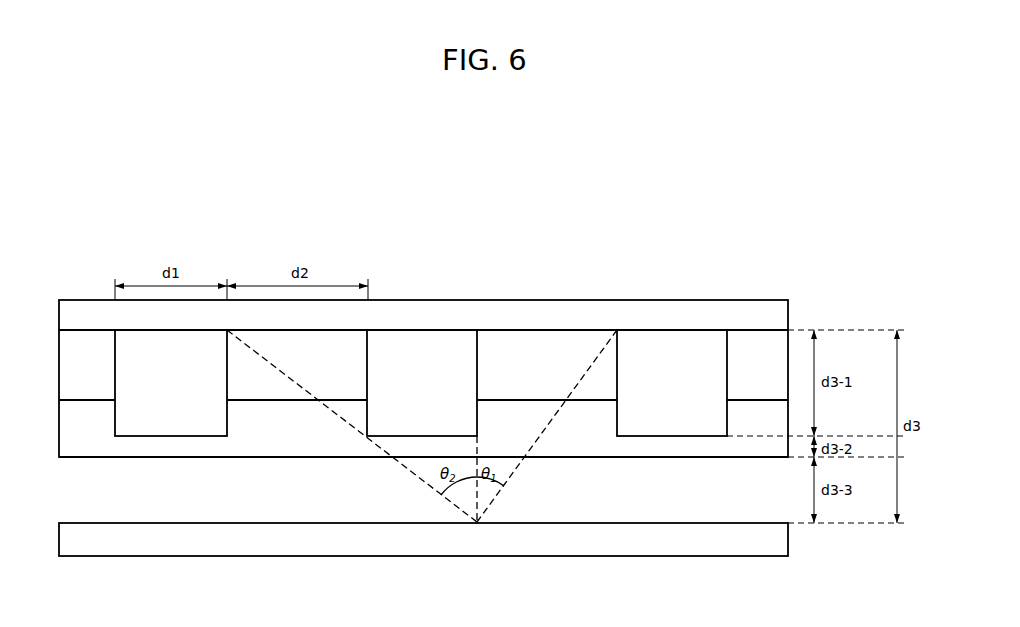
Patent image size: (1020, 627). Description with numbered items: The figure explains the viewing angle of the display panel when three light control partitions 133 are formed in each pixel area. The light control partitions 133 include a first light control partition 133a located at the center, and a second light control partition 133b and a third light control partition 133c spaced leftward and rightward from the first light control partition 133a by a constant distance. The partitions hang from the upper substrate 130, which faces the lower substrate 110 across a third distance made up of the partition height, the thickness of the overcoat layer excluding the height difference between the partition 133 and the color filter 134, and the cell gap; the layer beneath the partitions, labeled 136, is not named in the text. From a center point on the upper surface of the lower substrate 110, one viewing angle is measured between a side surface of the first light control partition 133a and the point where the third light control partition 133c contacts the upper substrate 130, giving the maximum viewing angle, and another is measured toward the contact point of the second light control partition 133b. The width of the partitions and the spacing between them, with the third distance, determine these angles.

The lower substrate 110 is at (778, 540).
The upper substrate 130 is at (780, 310).
The light control partitions 133 is at (587, 197).
The first light control partition 133a is at (448, 352).
The second light control partition 133b is at (195, 369).
The third light control partition 133c is at (652, 352).
The color filter 134 is at (535, 345).
The lower layer 136 is at (590, 433).